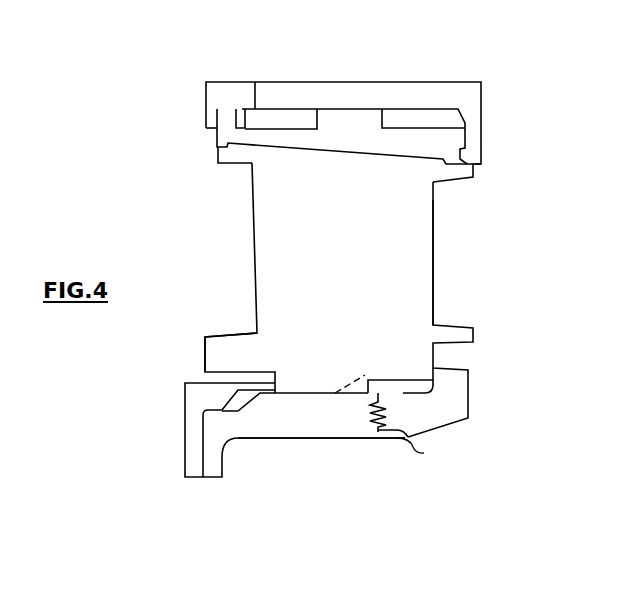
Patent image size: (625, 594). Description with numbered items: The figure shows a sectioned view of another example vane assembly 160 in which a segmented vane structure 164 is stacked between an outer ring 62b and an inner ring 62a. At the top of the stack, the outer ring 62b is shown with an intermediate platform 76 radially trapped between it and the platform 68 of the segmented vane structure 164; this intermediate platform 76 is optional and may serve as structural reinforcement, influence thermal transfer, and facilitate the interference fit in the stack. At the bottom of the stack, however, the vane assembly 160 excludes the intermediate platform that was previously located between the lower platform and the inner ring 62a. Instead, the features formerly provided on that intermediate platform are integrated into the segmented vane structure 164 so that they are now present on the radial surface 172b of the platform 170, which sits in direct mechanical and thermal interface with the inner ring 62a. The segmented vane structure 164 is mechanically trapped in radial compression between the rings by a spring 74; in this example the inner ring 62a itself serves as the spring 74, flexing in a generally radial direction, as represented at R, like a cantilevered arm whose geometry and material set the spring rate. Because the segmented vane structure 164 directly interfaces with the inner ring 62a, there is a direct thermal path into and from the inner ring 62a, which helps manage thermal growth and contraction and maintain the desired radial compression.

The vane assembly 160 is at (280, 300).
The outer ring 62b is at (292, 75).
The intermediate platform 76 is at (413, 128).
The inner platform 68 is at (233, 172).
The segmented vane structure 164 is at (443, 257).
The platform 170 is at (224, 330).
The radial surface 172b is at (400, 387).
The radial direction of flex R is at (419, 449).
The inner ring 62a is at (276, 448).
The spring 74 is at (367, 448).